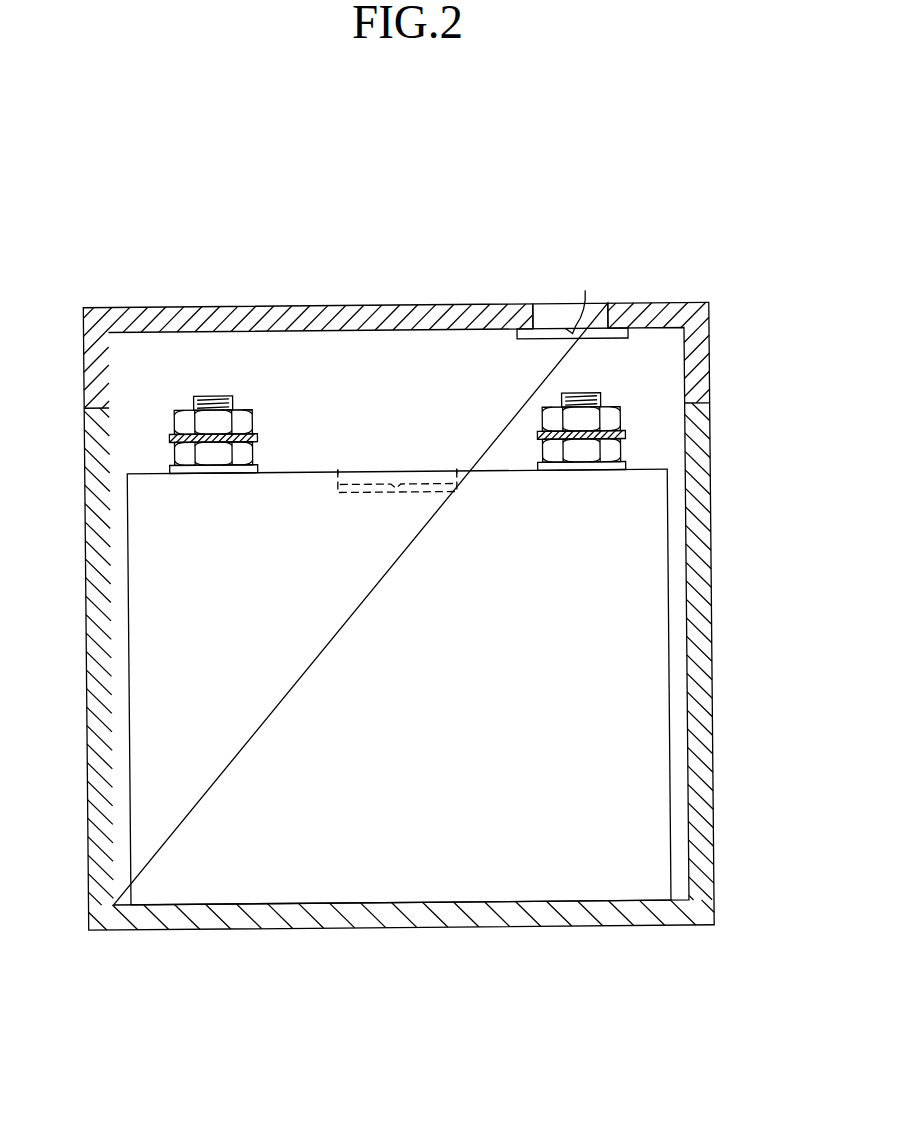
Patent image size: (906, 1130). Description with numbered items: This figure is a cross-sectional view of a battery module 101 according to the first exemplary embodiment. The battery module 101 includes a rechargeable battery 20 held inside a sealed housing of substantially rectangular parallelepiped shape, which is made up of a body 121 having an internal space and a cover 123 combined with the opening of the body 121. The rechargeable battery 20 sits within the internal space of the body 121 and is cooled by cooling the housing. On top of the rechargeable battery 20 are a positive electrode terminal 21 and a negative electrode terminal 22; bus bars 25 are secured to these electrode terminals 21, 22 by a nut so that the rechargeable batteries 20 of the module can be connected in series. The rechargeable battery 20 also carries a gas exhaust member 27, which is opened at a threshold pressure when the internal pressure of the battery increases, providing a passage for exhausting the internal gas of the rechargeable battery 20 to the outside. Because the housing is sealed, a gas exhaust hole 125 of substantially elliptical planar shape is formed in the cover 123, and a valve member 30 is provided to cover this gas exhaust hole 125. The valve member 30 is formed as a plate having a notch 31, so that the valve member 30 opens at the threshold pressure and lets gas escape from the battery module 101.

The battery module 101 is at (376, 198).
The rechargeable battery 20 is at (128, 737).
The positive electrode terminal 21 is at (216, 394).
The negative electrode terminal 22 is at (649, 415).
The bus bar 25 is at (629, 436).
The gas exhaust member 27 is at (418, 470).
The valve member 30 is at (556, 329).
The notch 31 is at (588, 292).
The body 121 is at (698, 601).
The cover 123 is at (365, 306).
The gas exhaust hole 125 is at (600, 305).